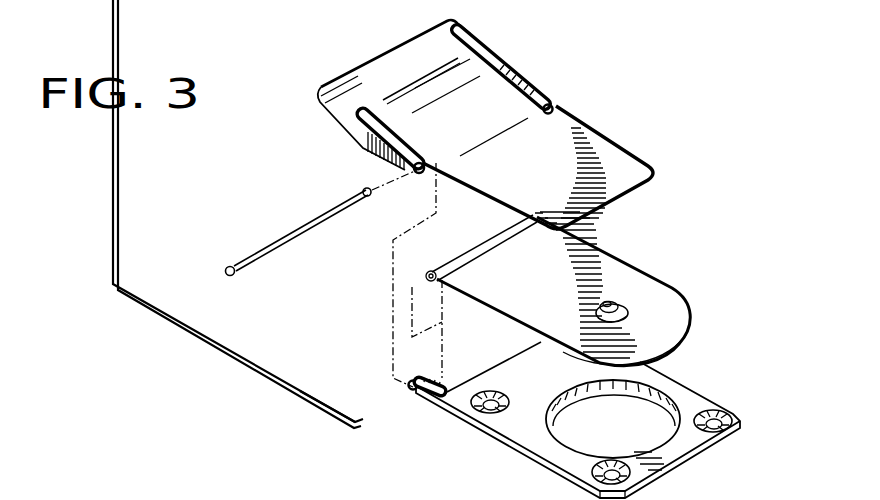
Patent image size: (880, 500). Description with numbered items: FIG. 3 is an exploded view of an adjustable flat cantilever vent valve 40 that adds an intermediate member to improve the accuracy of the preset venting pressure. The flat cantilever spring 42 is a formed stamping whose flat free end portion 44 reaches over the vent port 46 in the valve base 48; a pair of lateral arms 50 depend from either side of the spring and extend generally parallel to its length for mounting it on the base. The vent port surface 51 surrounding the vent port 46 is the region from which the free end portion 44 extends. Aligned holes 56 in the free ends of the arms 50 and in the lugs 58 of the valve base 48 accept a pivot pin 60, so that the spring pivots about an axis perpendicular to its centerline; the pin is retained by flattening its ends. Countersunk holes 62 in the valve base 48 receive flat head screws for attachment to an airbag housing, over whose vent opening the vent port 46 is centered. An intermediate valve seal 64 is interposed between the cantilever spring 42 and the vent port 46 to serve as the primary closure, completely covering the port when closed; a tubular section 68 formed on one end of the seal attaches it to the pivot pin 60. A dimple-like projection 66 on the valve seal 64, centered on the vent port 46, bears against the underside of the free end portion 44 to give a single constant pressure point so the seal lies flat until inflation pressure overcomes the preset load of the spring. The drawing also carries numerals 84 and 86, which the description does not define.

The vent valve 40 is at (662, 112).
The flat cantilever spring 42 is at (497, 116).
The free end portion 44 is at (613, 170).
The vent port 46 is at (615, 421).
The valve base 48 is at (693, 395).
The lateral arms 50 is at (514, 62).
The vent port surface 51 is at (678, 447).
The aligned holes 56 is at (556, 112).
The lugs 58 is at (448, 392).
The pivot pin 60 is at (302, 218).
The countersunk holes 62 is at (717, 404).
The intermediate valve seal 64 is at (598, 278).
The dimple-like projection 66 is at (628, 298).
The tubular section 68 is at (477, 242).
The bracket arm 84 is at (238, 250).
The bracket arm 86 is at (290, 445).